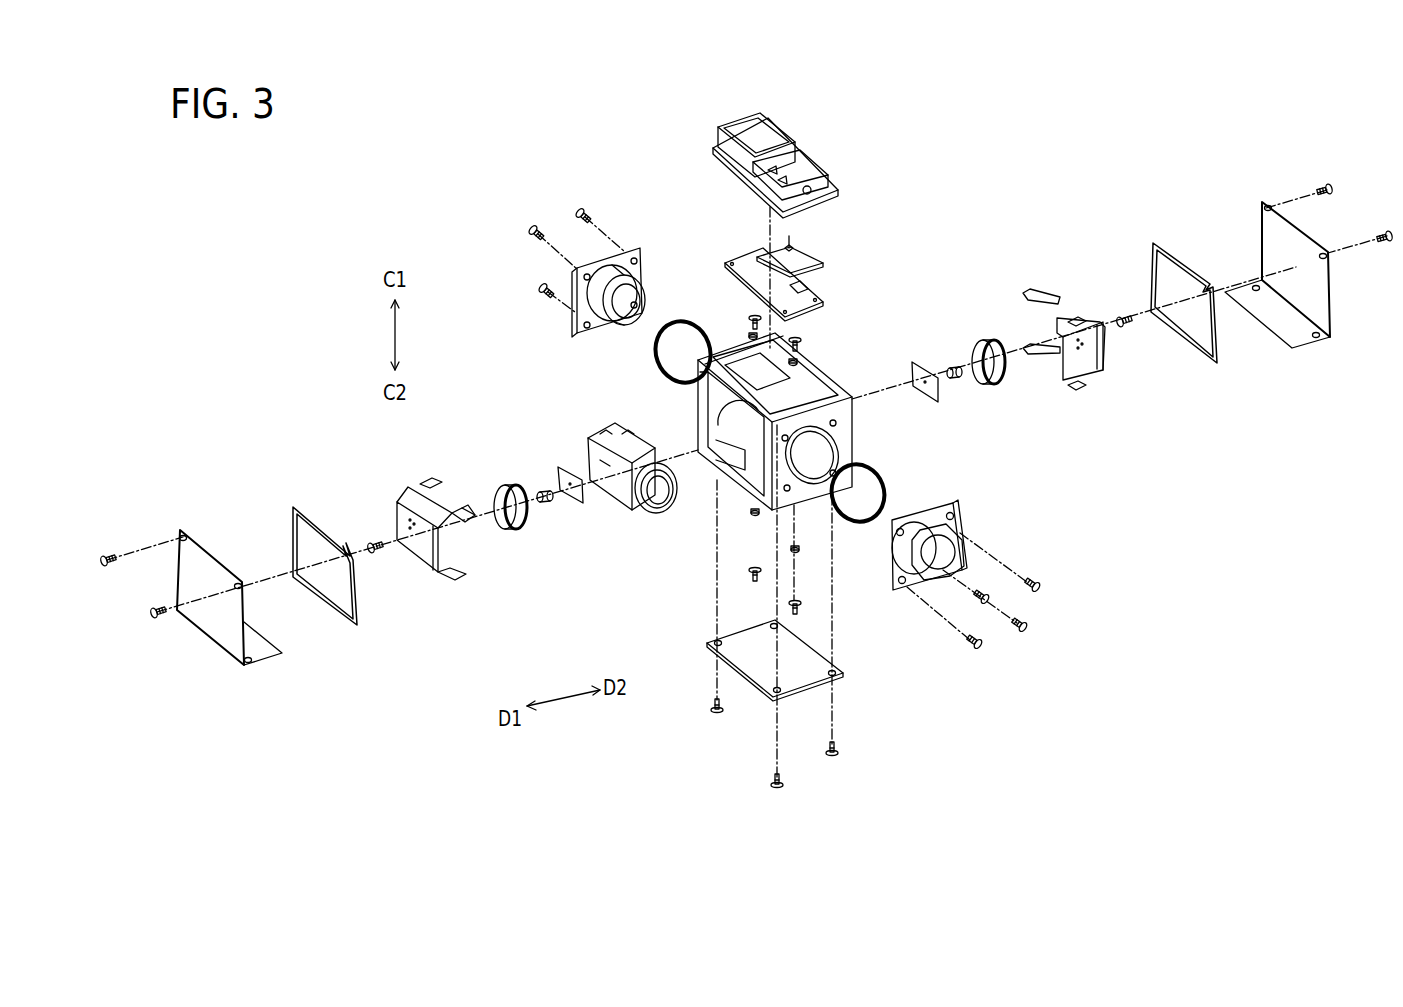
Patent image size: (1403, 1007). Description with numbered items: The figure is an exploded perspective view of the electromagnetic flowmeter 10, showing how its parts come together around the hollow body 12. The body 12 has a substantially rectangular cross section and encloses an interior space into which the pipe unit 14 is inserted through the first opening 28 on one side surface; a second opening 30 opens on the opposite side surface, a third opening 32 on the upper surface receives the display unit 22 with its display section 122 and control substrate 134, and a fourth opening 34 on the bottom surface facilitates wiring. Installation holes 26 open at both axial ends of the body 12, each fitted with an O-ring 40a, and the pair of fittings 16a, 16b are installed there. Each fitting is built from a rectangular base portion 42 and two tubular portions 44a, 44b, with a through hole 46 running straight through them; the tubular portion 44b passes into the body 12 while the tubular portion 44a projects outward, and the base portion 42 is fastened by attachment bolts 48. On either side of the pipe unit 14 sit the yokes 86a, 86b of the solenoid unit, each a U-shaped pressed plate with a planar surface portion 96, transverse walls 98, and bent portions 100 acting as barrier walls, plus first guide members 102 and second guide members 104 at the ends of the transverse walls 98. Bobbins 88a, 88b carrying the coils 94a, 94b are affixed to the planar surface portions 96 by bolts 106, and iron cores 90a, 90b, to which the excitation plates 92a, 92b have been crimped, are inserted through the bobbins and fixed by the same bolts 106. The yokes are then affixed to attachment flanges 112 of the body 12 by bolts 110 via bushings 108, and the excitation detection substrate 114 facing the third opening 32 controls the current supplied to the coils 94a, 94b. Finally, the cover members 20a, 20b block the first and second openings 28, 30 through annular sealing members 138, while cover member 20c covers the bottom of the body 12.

The electromagnetic flowmeter 10 is at (1258, 110).
The body 12 is at (762, 431).
The pipe unit 14 is at (619, 524).
The fitting 16a is at (974, 529).
The fitting 16b is at (771, 437).
The cover member 20a is at (225, 640).
The cover member 20b is at (1312, 305).
The cover member 20c is at (750, 663).
The display unit 22 is at (790, 143).
The installation hole 26 is at (828, 448).
The first opening 28 is at (740, 487).
The second opening 30 is at (800, 376).
The third opening 32 is at (803, 392).
The fourth opening 34 is at (735, 445).
The O-ring 40a is at (655, 361).
The base portion 42 is at (583, 313).
The tubular portion 44a is at (958, 550).
The tubular portion 44b is at (645, 295).
The through hole 46 is at (607, 298).
The attachment bolt 48 is at (585, 208).
The yoke 86a is at (771, 443).
The yoke 86b is at (1096, 402).
The bobbin 88a is at (500, 490).
The bobbin 88b is at (1016, 385).
The iron core 90a is at (545, 505).
The iron core 90b is at (954, 378).
The excitation plate 92a is at (573, 503).
The excitation plate 92b is at (925, 362).
The coil 94a is at (512, 528).
The coil 94b is at (985, 340).
The planar surface portion 96 is at (423, 547).
The transverse wall 98 is at (428, 478).
The bent portion 100 is at (470, 572).
The first guide member 102 is at (425, 482).
The second guide member 104 is at (468, 510).
The bolt 106 is at (372, 545).
The bushing 108 is at (788, 362).
The bolt 110 is at (792, 332).
The attachment flange 112 is at (712, 386).
The excitation detection substrate 114 is at (812, 297).
The display section 122 is at (757, 120).
The control substrate 134 is at (803, 249).
The annular sealing member 138 is at (340, 615).